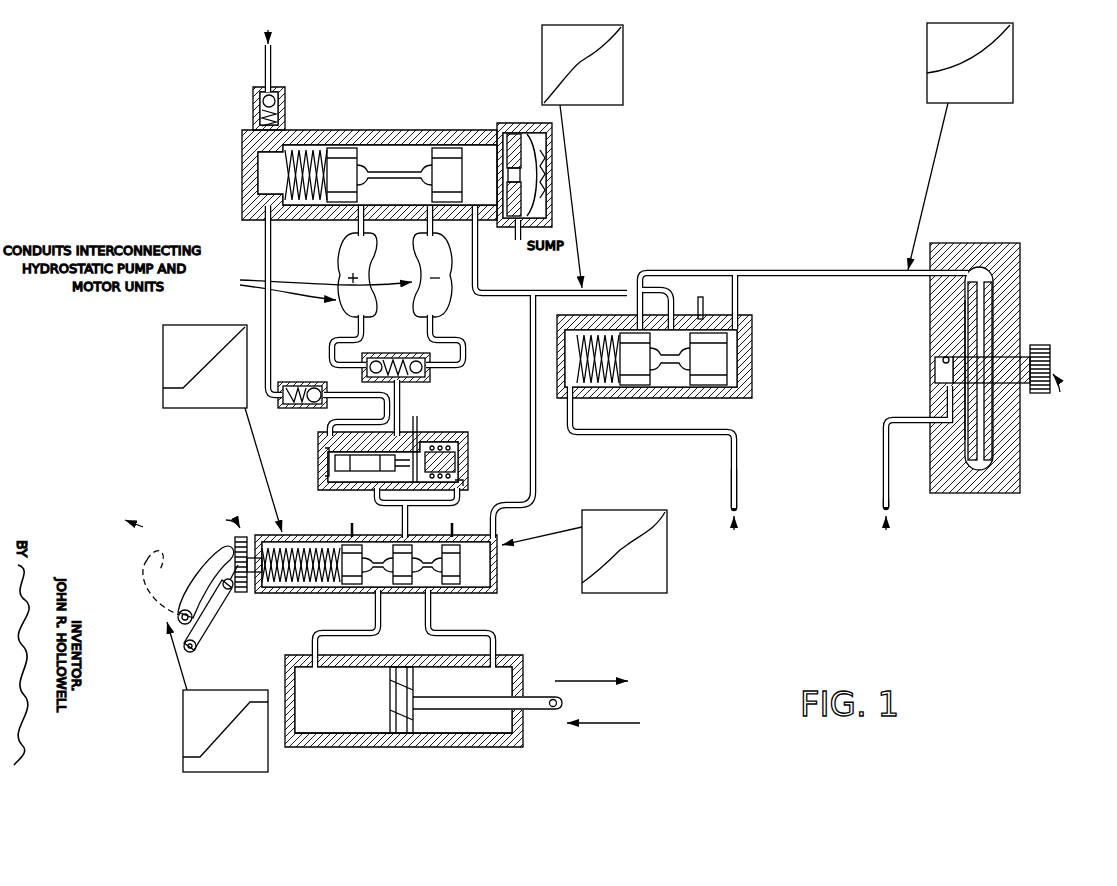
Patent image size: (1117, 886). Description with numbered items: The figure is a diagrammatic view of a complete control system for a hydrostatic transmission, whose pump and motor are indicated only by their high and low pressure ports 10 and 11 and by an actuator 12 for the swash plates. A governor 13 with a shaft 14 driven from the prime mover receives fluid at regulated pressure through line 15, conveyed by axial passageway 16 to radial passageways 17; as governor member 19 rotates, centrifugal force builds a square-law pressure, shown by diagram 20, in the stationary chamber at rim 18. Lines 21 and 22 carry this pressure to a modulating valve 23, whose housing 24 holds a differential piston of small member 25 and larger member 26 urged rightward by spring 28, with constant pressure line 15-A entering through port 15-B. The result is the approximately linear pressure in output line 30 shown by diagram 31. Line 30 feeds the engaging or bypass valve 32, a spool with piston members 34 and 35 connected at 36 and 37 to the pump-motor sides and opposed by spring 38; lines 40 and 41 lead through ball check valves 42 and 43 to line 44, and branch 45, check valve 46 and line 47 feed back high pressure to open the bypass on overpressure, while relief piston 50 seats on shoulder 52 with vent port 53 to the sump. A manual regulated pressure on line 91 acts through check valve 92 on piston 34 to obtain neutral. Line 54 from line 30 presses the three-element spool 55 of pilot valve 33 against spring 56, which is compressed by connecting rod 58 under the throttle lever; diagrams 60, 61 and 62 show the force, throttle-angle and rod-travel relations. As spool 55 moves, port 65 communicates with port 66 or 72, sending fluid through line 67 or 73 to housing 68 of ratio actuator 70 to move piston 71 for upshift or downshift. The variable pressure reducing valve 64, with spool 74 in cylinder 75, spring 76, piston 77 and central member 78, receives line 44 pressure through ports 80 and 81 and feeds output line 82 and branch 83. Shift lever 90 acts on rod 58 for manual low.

The high pressure port 10 is at (343, 271).
The low pressure port 11 is at (437, 288).
The actuator 12 is at (540, 696).
The governor 13 is at (1023, 286).
The governor shaft 14 is at (1045, 348).
The supply line 15 is at (889, 477).
The constant pressure line 15-A is at (737, 458).
The port 15-B is at (574, 398).
The axial passageway 16 is at (1003, 348).
The radially extending passageways 17 is at (985, 318).
The rim chamber 18 is at (1000, 268).
The governor member 19 is at (970, 306).
The pressure-speed diagram 20 is at (1013, 68).
The line 21 is at (738, 296).
The line 22 is at (682, 272).
The modulating valve 23 is at (755, 360).
The valve housing 24 is at (712, 318).
The small piston member 25 is at (661, 398).
The larger piston member 26 is at (720, 398).
The spring 28 is at (626, 396).
The output line 30 is at (478, 240).
The pressure-speed diagram 31 is at (623, 78).
The engaging or bypass valve 32 is at (356, 128).
The actuator pilot valve 33 is at (312, 533).
The piston member 34 is at (333, 205).
The piston member 35 is at (433, 222).
The connection 36 is at (358, 224).
The port 37 is at (433, 236).
The spring 38 is at (308, 147).
The line 40 is at (393, 148).
The line 41 is at (452, 338).
The ball check valve 42 is at (368, 376).
The ball check valve 43 is at (424, 377).
The line 44 is at (400, 385).
The line 45 is at (337, 399).
The ball check valve 46 is at (298, 385).
The line 47 is at (262, 232).
The relief piston 50 is at (500, 134).
The annular shoulder 52 is at (511, 134).
The vent port 53 is at (522, 132).
The line 54 is at (536, 457).
The three-element spool 55 is at (460, 590).
The spring 56 is at (317, 590).
The connecting rod 58 is at (244, 537).
The force-speed diagram 60 is at (624, 510).
The throttle angle diagram 61 is at (183, 712).
The force-travel curve 62 is at (163, 347).
The variable pressure reducing valve 64 is at (470, 458).
The port 65 is at (409, 531).
The port 66 is at (425, 590).
The line 67 is at (490, 634).
The actuator housing 68 is at (428, 746).
The ratio actuator 70 is at (520, 750).
The actuator piston 71 is at (398, 735).
The port 72 is at (375, 590).
The line 73 is at (378, 631).
The spool member 74 is at (345, 472).
The cylinder 75 is at (450, 445).
The spring 76 is at (462, 483).
The piston 77 is at (458, 450).
The central member 78 is at (431, 442).
The port 80 is at (413, 430).
The port 81 is at (322, 450).
The output line 82 is at (380, 507).
The branch 83 is at (455, 508).
The shift lever 90 is at (222, 600).
The line 91 is at (272, 77).
The ball check valve 92 is at (286, 104).